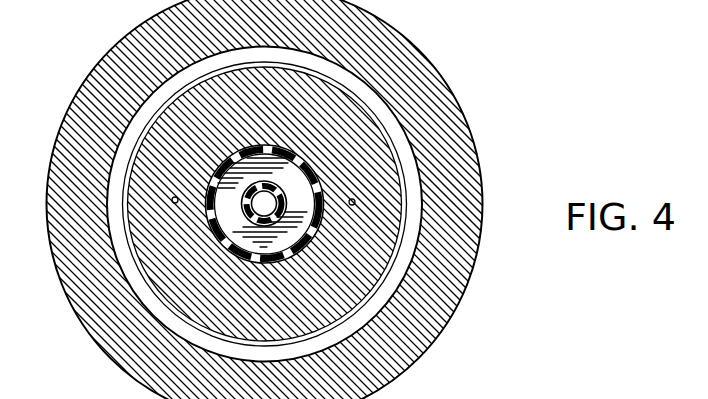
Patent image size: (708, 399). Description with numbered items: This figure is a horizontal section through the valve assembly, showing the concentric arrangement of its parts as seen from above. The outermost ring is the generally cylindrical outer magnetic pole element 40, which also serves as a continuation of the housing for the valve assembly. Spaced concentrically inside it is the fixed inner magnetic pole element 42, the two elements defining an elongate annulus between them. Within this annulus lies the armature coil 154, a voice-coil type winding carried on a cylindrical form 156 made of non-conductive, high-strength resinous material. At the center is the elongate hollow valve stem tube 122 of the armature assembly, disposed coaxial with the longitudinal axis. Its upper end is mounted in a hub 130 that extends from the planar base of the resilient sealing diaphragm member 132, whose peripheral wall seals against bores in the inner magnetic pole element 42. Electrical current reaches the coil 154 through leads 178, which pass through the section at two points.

The outer magnetic pole element 40 is at (427, 82).
The inner magnetic pole element 42 is at (373, 257).
The valve stem tube 122 is at (266, 200).
The hub 130 is at (214, 244).
The resilient sealing diaphragm member 132 is at (250, 218).
The coil 154 is at (415, 172).
The cylindrical form 156 is at (402, 217).
The leads 178 is at (173, 203).